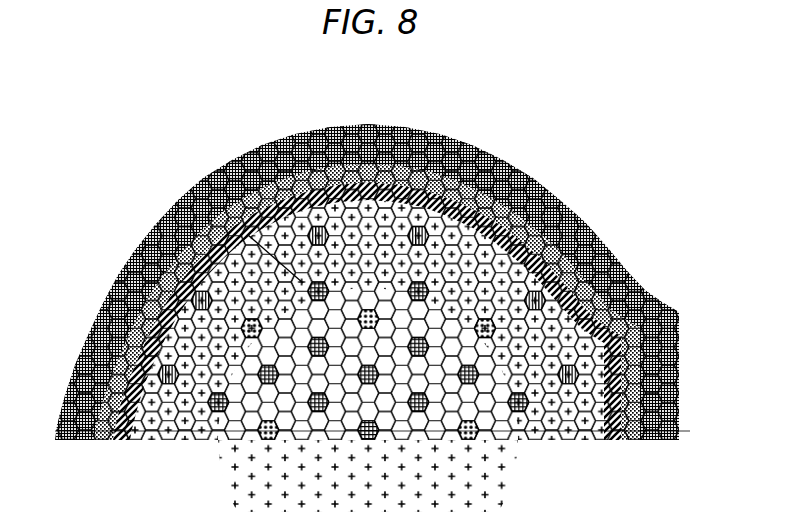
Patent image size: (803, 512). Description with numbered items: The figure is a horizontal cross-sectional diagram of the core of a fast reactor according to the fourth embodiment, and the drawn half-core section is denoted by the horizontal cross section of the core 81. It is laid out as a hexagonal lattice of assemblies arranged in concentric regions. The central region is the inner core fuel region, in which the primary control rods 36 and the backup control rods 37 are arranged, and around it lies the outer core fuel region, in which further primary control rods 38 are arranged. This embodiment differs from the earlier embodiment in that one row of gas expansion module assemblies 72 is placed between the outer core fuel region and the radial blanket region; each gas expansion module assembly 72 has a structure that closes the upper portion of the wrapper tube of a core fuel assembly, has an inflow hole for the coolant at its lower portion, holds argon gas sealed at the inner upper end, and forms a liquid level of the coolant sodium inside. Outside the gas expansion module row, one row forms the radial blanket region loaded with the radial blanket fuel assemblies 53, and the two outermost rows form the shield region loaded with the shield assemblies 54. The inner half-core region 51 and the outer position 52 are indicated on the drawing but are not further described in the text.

The horizontal cross section of the core 81 is at (401, 256).
The primary control rods 36 is at (205, 183).
The shield assemblies 54 is at (453, 138).
The radial blanket fuel assemblies 53 is at (490, 183).
The backup control rods 37 is at (365, 318).
The outer layer cells 52 is at (642, 286).
The primary control rods 38 is at (675, 333).
The gas expansion module assembly 72 is at (615, 423).
The core region 51 is at (303, 392).